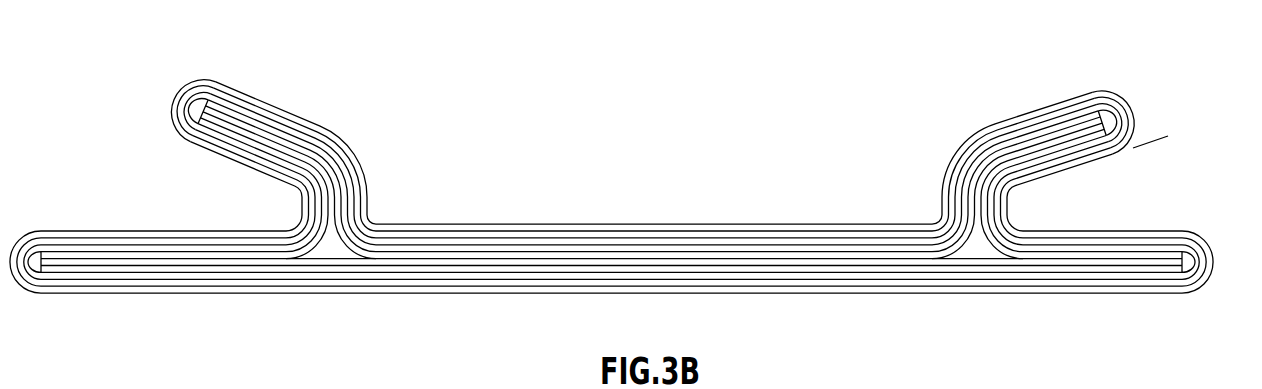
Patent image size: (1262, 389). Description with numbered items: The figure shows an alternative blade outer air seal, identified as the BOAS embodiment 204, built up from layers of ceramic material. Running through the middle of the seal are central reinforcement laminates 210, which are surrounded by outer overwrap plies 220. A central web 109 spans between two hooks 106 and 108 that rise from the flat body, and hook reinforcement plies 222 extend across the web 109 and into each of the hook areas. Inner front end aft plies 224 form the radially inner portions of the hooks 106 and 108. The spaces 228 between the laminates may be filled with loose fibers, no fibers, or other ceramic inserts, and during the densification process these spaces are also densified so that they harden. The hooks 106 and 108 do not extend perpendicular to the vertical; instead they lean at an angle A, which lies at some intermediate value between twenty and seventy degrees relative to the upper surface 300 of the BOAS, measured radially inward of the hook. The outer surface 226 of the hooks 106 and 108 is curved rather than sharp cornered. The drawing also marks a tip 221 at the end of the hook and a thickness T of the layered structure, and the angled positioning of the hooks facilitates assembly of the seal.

The hook 106 is at (290, 126).
The hook 108 is at (1038, 112).
The web 109 is at (645, 296).
The BOAS embodiment 204 is at (934, 109).
The central reinforcement laminates 210 is at (349, 268).
The outer overwrap plies 220 is at (452, 282).
The fold tip 221 is at (1134, 103).
The hook reinforcement plies 222 is at (312, 145).
The inner front end aft plies 224 is at (261, 150).
The outer surface 226 is at (360, 168).
The space 228 is at (972, 250).
The upper surface 300 is at (1100, 231).
The thickness T is at (368, 203).
The angle A is at (1165, 139).